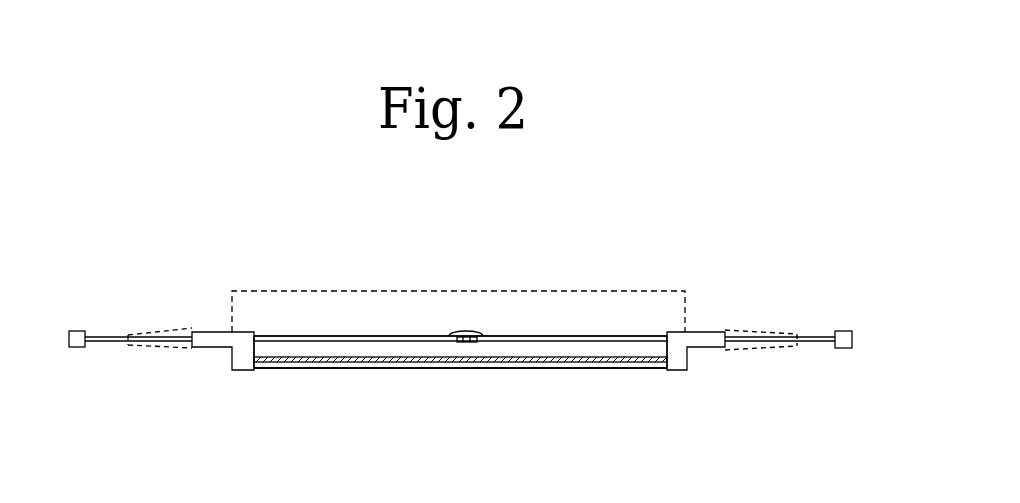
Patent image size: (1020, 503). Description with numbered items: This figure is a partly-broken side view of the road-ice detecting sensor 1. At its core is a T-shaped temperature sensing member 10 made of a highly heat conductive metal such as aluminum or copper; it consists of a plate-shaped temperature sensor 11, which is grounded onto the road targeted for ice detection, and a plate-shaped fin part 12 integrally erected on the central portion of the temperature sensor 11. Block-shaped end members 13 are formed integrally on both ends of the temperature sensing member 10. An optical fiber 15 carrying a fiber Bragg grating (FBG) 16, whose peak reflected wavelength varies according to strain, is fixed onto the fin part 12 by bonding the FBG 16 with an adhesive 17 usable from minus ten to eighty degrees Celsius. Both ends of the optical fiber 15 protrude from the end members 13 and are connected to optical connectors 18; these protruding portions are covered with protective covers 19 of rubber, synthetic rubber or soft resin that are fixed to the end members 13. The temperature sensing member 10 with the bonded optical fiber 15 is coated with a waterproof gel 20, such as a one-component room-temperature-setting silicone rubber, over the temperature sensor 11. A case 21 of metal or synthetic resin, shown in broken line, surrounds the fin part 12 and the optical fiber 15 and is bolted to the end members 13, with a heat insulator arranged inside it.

The road-ice detecting sensor 1 is at (393, 181).
The temperature sensing member 10 is at (488, 376).
The temperature sensor 11 is at (292, 368).
The fin part 12 is at (580, 347).
The end members 13 is at (242, 345).
The optical fiber 15 is at (306, 328).
The fiber Bragg grating (FBG) 16 is at (453, 358).
The adhesive 17 is at (463, 332).
The optical connectors 18 is at (86, 325).
The protective covers 19 is at (170, 347).
The waterproof gel 20 is at (538, 363).
The case 21 is at (343, 282).